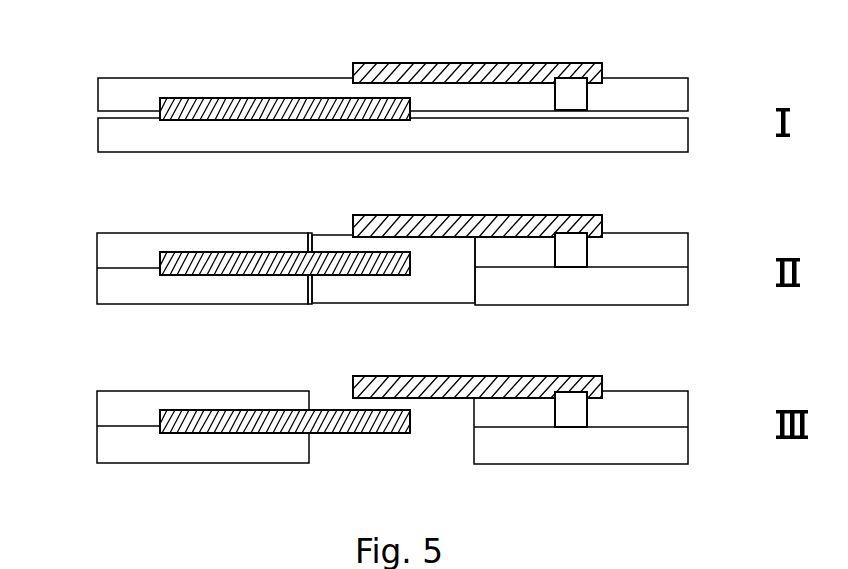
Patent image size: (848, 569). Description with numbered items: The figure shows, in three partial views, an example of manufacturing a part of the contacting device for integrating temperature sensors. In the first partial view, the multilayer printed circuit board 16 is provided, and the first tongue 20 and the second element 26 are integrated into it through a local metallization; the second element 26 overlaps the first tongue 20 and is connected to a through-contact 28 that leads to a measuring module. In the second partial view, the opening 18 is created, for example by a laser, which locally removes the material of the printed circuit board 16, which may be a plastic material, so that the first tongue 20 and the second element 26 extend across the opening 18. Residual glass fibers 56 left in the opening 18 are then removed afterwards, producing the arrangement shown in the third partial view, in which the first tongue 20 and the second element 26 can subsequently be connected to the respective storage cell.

The printed circuit board 16 is at (147, 68).
The opening 18 is at (330, 215).
The first tongue 20 is at (283, 98).
The second element 26 is at (483, 70).
The through-contact 28 is at (577, 98).
The residual glass fibers 56 is at (447, 288).